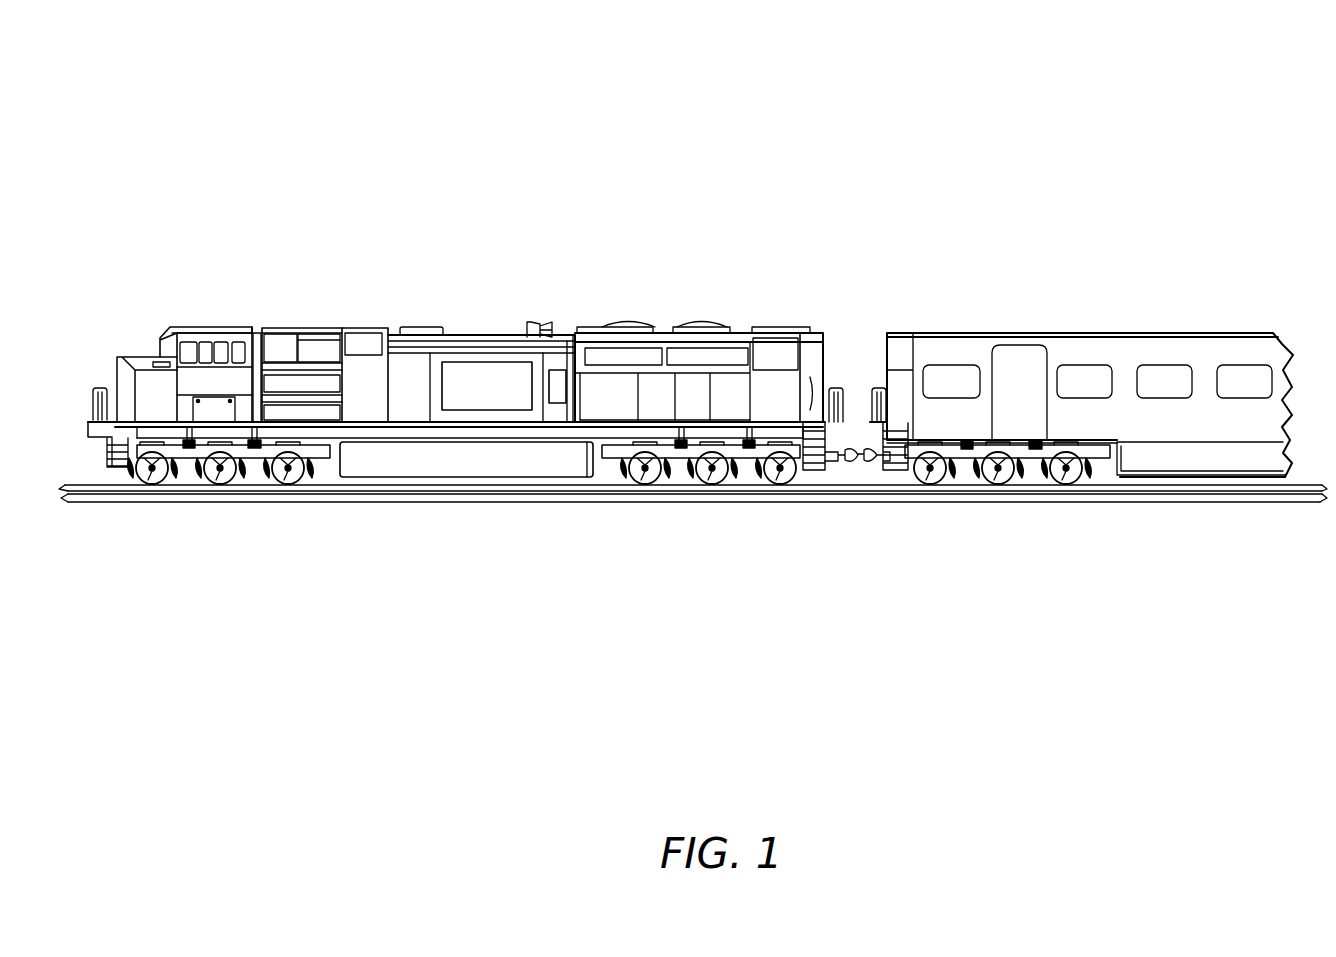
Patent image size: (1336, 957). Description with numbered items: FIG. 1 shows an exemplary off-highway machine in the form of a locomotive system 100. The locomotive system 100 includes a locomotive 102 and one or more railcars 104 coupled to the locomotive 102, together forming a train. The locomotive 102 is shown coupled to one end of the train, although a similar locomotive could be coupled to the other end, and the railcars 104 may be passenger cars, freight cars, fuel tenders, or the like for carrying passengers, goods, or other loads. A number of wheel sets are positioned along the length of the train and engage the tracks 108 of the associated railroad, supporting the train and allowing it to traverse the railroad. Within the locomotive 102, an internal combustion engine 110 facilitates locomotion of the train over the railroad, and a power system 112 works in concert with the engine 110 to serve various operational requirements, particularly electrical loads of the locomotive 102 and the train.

The locomotive system 100 is at (1090, 117).
The locomotive 102 is at (667, 327).
The railcars 104 is at (1067, 333).
The tracks 108 is at (387, 486).
The internal combustion engine 110 is at (482, 361).
The power system 112 is at (558, 369).